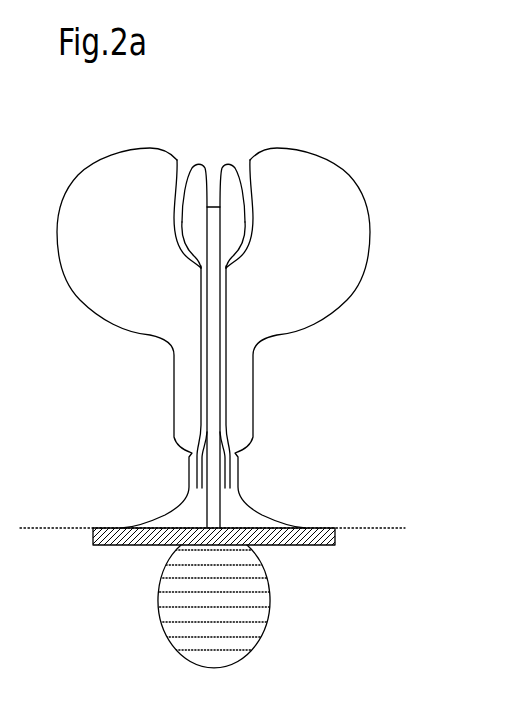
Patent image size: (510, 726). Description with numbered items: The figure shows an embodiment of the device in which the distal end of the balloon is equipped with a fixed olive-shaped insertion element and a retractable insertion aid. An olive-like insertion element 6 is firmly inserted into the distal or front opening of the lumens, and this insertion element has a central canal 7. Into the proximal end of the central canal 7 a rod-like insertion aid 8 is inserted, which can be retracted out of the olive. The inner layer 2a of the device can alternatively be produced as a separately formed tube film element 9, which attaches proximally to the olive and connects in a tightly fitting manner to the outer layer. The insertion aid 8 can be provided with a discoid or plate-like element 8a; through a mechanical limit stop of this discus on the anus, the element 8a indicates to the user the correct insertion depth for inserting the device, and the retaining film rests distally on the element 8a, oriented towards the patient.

The inner layer 2a is at (213, 338).
The tube film element 9 is at (229, 264).
The olive-like insertion element 6 is at (197, 190).
The central canal 7 is at (230, 167).
The insertion aid 8 is at (210, 383).
The plate-like element 8a is at (306, 546).